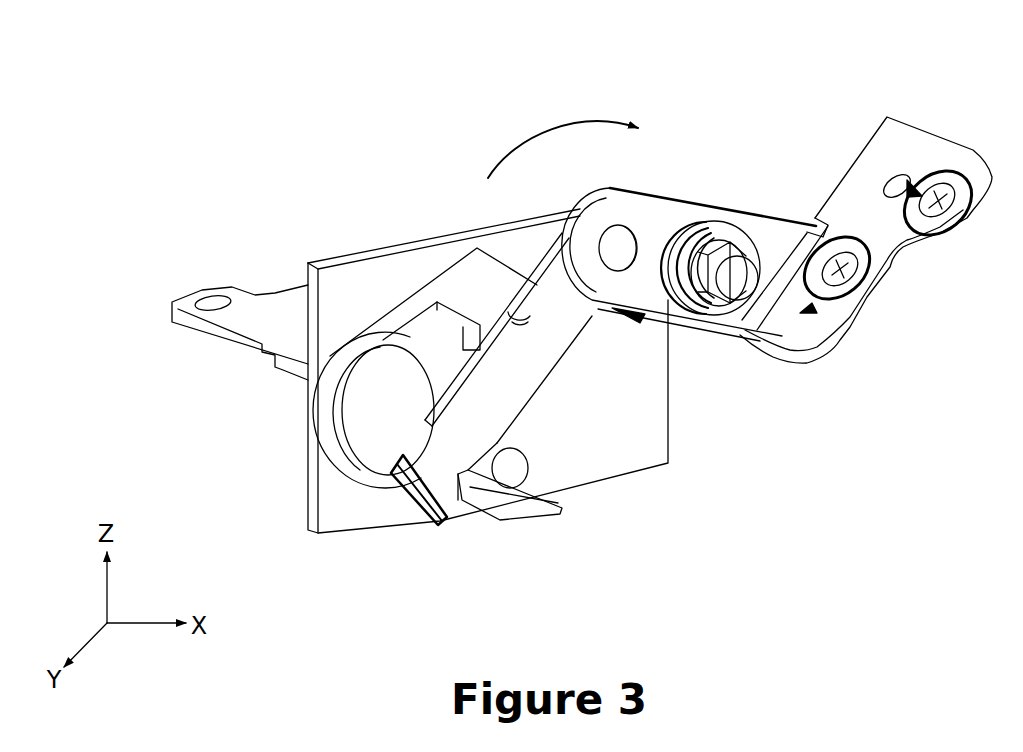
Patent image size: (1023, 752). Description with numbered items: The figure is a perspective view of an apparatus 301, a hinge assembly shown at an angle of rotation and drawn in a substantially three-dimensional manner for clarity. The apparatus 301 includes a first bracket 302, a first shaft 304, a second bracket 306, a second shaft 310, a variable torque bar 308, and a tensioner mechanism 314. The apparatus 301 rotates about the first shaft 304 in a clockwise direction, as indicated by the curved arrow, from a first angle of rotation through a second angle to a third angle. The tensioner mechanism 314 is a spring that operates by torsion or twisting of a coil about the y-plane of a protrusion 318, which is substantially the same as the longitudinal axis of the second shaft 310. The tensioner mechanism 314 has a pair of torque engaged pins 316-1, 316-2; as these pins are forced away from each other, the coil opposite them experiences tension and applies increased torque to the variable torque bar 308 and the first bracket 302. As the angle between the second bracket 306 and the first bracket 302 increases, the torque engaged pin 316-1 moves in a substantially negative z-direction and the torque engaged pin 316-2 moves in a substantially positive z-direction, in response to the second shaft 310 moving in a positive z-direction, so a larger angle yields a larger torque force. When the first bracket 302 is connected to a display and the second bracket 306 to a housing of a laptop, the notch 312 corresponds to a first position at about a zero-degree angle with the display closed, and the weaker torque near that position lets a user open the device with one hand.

The apparatus 301 is at (330, 97).
The first bracket 302 is at (665, 218).
The first shaft 304 is at (730, 298).
The second bracket 306 is at (430, 243).
The variable torque bar 308 is at (513, 386).
The second shaft 310 is at (613, 252).
The notch 312 is at (462, 505).
The tensioner mechanism 314 is at (398, 313).
The torque engaged pin 316-1 is at (513, 473).
The torque engaged pin 316-2 is at (514, 313).
The protrusion 318 is at (375, 432).